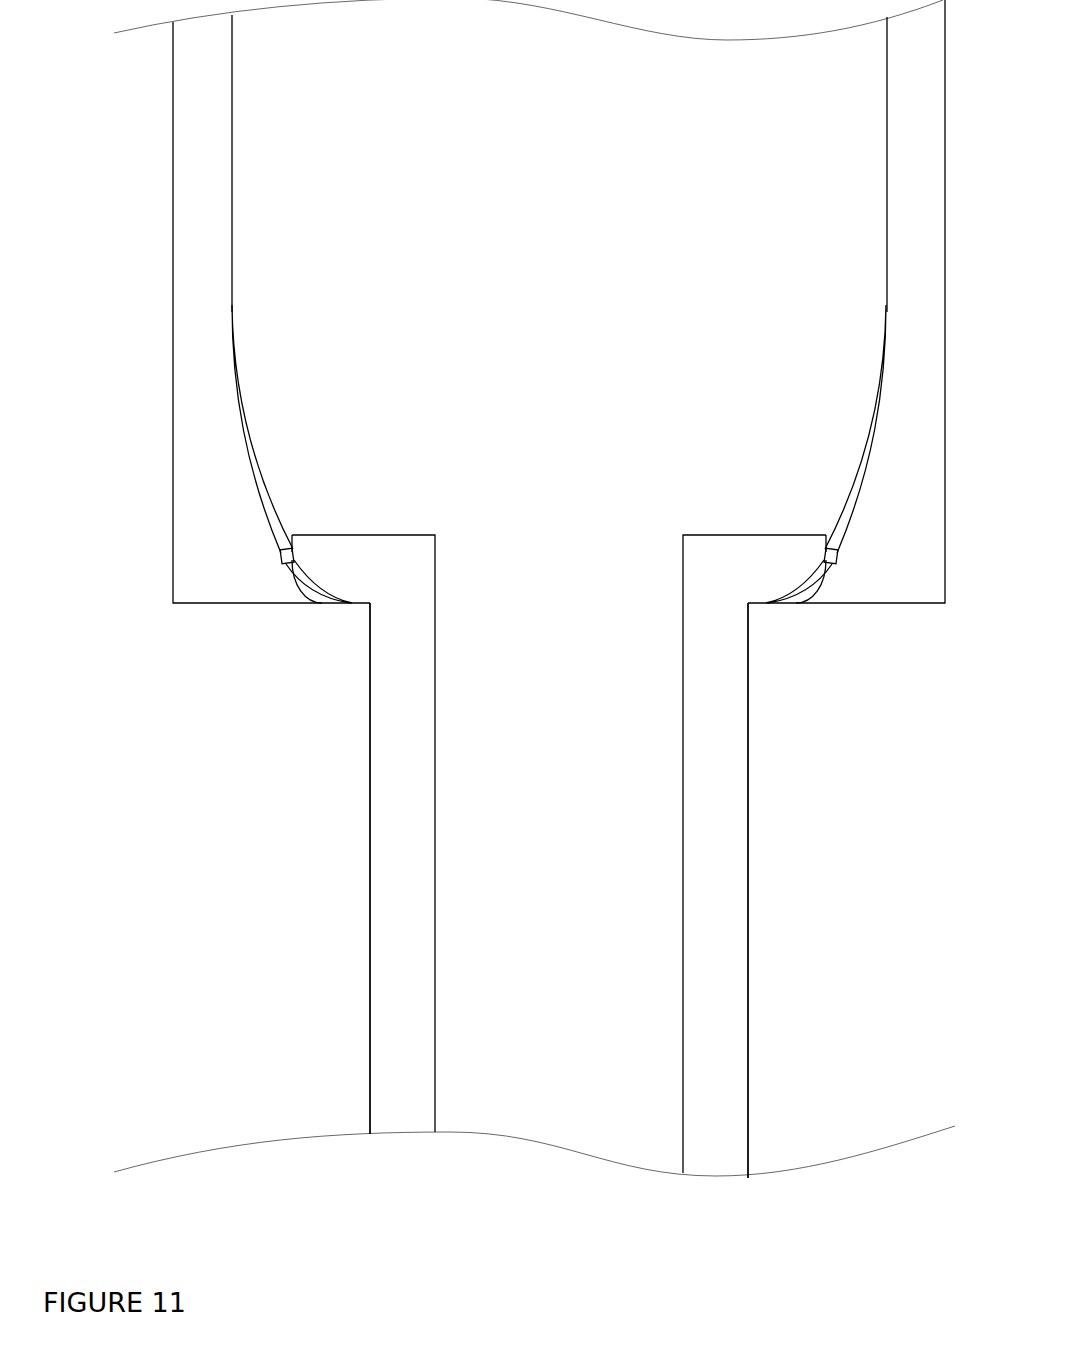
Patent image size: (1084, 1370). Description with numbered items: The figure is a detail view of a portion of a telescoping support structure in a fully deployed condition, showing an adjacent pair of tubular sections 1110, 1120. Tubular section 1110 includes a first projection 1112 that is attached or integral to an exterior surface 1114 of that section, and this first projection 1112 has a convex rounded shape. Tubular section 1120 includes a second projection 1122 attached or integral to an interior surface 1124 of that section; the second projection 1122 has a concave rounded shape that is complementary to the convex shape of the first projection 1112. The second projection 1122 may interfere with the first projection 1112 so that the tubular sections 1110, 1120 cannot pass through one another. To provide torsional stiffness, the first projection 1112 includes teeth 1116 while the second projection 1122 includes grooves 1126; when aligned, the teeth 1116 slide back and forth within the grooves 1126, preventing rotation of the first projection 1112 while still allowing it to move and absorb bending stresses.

The tubular section 1110 is at (368, 1042).
The first projection 1112 is at (335, 575).
The exterior surface 1114 is at (370, 852).
The teeth 1116 is at (280, 559).
The tubular section 1120 is at (173, 312).
The second projection 1122 is at (260, 583).
The interior surface 1124 is at (887, 284).
The grooves 1126 is at (262, 523).